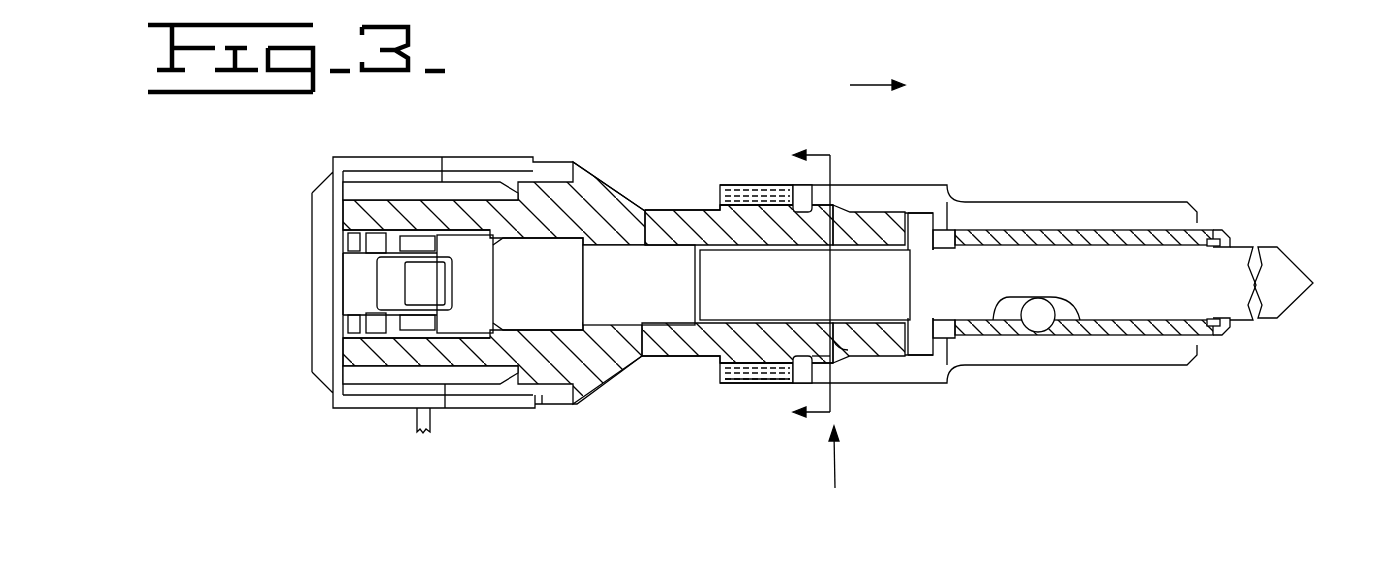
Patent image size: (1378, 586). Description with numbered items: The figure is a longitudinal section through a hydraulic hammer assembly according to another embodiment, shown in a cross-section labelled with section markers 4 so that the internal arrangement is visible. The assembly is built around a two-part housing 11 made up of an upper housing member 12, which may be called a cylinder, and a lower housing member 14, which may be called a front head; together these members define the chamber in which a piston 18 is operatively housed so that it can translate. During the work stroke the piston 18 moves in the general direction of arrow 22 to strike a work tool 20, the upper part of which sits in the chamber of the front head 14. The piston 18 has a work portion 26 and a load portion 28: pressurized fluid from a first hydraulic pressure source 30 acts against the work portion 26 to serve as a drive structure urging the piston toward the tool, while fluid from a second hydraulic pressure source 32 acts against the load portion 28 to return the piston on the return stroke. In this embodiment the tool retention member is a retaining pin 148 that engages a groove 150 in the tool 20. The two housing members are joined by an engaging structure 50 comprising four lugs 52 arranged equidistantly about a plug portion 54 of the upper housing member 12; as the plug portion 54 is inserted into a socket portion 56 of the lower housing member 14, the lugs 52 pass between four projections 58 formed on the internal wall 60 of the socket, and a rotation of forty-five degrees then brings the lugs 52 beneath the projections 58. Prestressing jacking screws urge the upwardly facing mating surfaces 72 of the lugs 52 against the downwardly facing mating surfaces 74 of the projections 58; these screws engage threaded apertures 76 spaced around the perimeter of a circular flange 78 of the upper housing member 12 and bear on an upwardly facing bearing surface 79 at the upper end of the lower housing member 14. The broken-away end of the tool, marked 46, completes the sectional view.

The section line 4- 4 is at (821, 285).
The housing 11 is at (705, 210).
The upper housing member 12 is at (600, 345).
The lower housing member 14 is at (970, 200).
The piston 18 is at (548, 258).
The work tool 20 is at (1152, 253).
The arrow 22 is at (863, 86).
The work portion 26 is at (575, 407).
The load portion 28 is at (697, 240).
The first hydraulic pressure source 30 is at (460, 380).
The second hydraulic pressure source 32 is at (413, 428).
The cable 46 is at (1313, 280).
The engaging structure 50 is at (844, 468).
The lugs 52 is at (838, 362).
The plug portion 54 is at (897, 222).
The socket portion 56 is at (868, 195).
The projections 58 is at (803, 362).
The internal wall 60 is at (808, 200).
The upwardly facing mating surfaces 72 is at (817, 355).
The downwardly facing mating surfaces 74 is at (842, 350).
The threaded apertures 76 is at (730, 367).
The circular flange 78 is at (747, 385).
The bearing surface 79 is at (767, 193).
The retaining pin 148 is at (1035, 325).
The groove 150 is at (1075, 330).